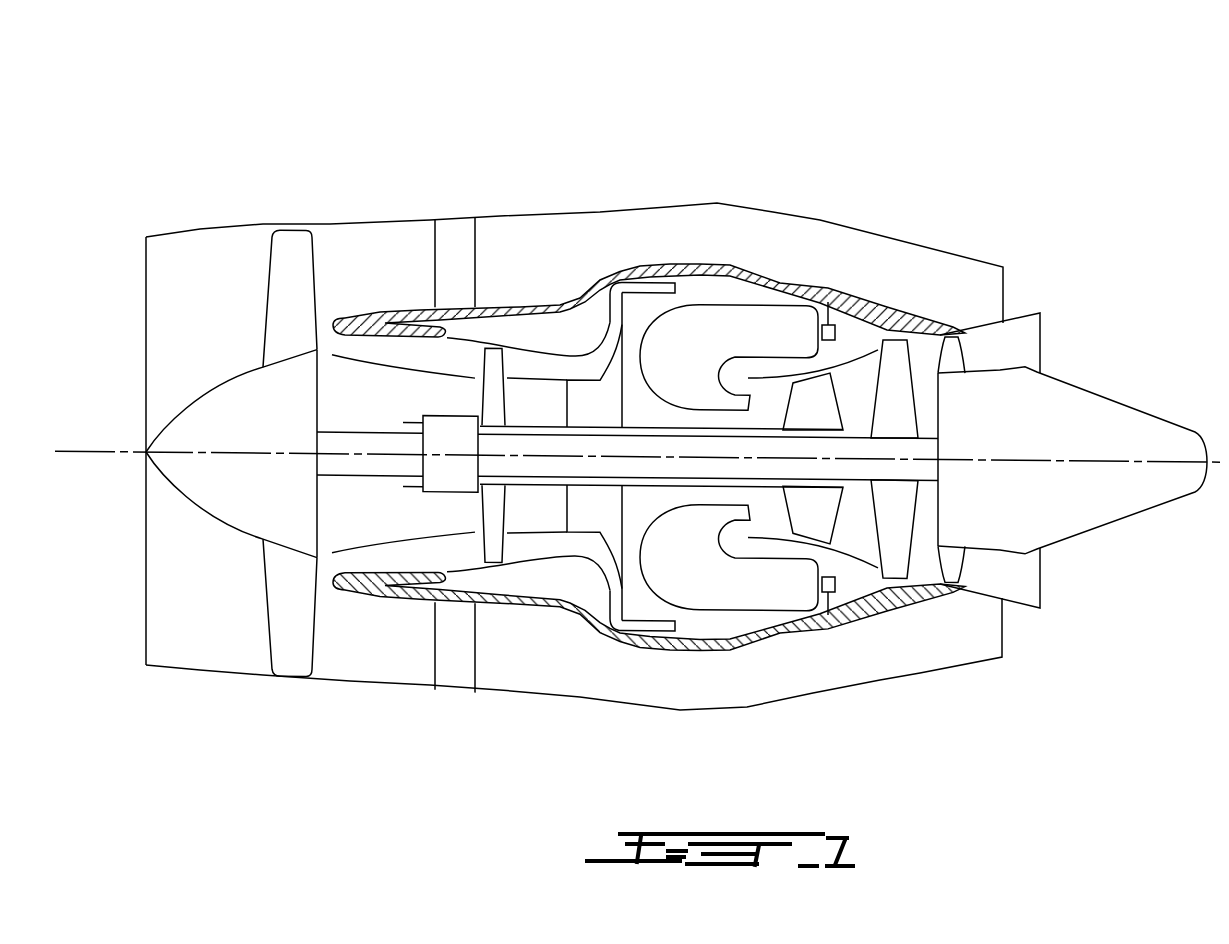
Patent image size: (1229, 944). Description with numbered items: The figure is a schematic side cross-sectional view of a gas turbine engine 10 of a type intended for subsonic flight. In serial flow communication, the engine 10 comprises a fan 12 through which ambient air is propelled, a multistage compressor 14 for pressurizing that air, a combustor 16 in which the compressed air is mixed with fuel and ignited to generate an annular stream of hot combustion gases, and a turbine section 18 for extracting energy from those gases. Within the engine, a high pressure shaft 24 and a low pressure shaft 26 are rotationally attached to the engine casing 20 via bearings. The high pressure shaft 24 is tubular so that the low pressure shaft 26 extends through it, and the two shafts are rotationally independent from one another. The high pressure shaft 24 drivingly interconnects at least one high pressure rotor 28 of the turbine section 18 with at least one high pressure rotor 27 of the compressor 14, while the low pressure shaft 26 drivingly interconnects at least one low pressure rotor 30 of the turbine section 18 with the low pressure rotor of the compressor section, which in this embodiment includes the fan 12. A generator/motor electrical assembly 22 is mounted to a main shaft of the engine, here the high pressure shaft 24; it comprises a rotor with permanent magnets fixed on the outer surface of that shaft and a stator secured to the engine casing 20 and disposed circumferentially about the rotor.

The gas turbine engine 10 is at (876, 148).
The fan 12 is at (285, 594).
The multistage compressor 14 is at (548, 351).
The combustor 16 is at (731, 316).
The turbine section 18 is at (853, 513).
The engine casing 20 is at (745, 259).
The generator/motor electrical assembly 22 is at (452, 429).
The high pressure shaft 24 is at (537, 483).
The low pressure shaft 26 is at (627, 472).
The high pressure rotor of the compressor 27 is at (601, 389).
The high pressure rotor of the turbine section 28 is at (817, 397).
The low pressure rotor of the turbine section 30 is at (897, 350).